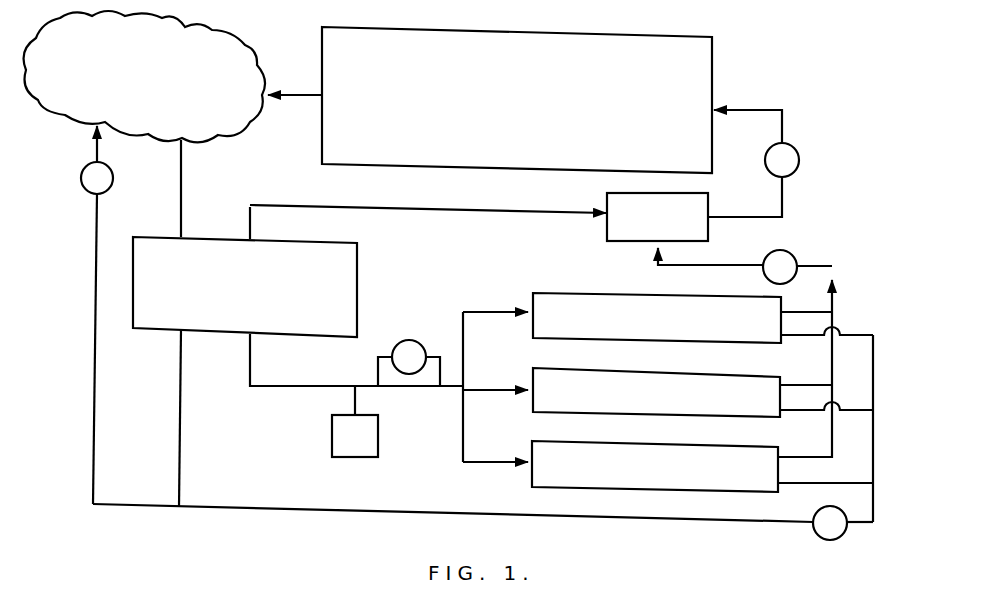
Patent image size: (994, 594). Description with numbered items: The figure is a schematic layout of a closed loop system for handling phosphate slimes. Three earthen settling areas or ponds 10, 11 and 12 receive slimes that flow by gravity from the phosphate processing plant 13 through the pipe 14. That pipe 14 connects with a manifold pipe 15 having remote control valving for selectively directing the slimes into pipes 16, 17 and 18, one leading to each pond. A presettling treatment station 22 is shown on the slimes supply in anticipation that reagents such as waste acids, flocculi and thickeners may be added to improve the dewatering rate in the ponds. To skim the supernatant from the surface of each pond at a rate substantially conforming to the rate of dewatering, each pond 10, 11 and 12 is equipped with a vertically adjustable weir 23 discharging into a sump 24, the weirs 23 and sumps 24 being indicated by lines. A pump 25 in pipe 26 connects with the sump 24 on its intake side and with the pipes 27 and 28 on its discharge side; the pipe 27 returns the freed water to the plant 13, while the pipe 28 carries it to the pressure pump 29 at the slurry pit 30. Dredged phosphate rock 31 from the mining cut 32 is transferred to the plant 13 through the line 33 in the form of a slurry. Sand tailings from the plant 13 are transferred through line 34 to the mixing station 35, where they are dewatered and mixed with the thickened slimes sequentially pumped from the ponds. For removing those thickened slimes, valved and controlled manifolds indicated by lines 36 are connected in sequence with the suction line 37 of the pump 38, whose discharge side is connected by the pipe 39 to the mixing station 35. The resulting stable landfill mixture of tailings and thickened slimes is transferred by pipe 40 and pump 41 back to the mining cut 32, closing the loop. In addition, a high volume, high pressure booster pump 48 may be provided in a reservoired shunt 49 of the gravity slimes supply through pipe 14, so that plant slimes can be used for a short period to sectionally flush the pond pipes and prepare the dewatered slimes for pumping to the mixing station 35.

The settling pond 10 is at (642, 332).
The settling pond 11 is at (646, 406).
The settling pond 12 is at (644, 480).
The phosphate processing plant 13 is at (338, 288).
The pipe 14 is at (250, 356).
The manifold pipe 15 is at (462, 410).
The pipe 16 is at (484, 311).
The pipe 17 is at (484, 388).
The pipe 18 is at (482, 460).
The presettling treatment station 22 is at (332, 432).
The vertically adjustable weir 23 is at (848, 336).
The sump 24 is at (873, 448).
The pump 25 is at (840, 535).
The pipe 26 is at (700, 520).
The pipe 27 is at (180, 447).
The pipe 28 is at (93, 351).
The pressure pump 29 is at (81, 176).
The slurry pit 30 is at (185, 28).
The dredged phosphate rock 31 is at (297, 100).
The mining cut 32 is at (462, 40).
The line 33 is at (181, 185).
The line 34 is at (440, 208).
The mixing station 35 is at (612, 202).
The manifolds 36 is at (800, 312).
The suction line 37 is at (766, 266).
The pump 38 is at (770, 256).
The pipe 39 is at (678, 268).
The pipe 40 is at (766, 112).
The pump 41 is at (800, 161).
The booster pump 48 is at (398, 340).
The reservoired shunt 49 is at (377, 361).